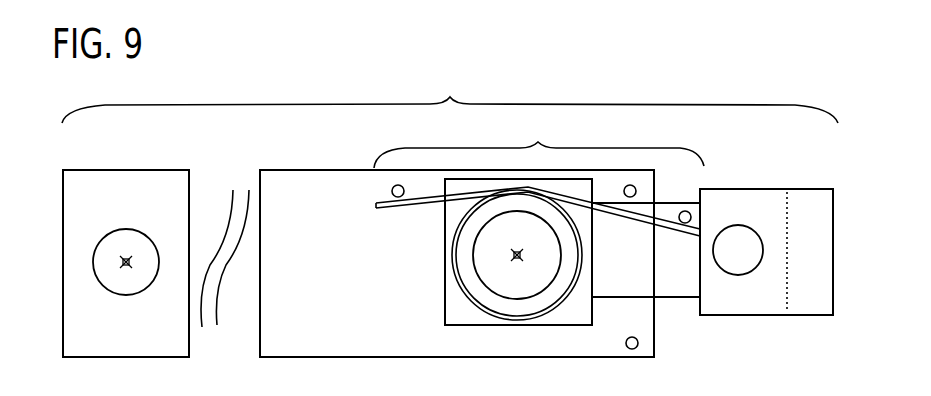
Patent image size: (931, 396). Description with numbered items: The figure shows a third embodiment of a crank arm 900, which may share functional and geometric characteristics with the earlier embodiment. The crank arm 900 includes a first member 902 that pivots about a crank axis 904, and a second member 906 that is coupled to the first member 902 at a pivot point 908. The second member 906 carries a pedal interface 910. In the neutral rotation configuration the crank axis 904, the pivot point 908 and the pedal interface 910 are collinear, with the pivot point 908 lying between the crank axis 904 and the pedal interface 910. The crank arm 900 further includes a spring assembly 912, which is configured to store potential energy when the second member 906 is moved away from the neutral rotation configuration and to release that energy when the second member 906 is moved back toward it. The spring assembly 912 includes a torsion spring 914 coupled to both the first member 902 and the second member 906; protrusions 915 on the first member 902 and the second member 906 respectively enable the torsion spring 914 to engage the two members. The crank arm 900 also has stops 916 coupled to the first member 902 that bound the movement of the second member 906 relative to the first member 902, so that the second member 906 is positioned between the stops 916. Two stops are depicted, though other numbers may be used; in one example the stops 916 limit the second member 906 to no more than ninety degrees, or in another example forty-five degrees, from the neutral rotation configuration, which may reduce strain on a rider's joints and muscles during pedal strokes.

The crank arm 900 is at (450, 100).
The first member 902 is at (300, 170).
The crank axis 904 is at (126, 256).
The second member 906 is at (672, 298).
The pivot point 908 is at (517, 249).
The pedal interface 910 is at (734, 226).
The spring assembly 912 is at (539, 146).
The torsion spring 914 is at (447, 212).
The protrusions 915 is at (392, 191).
The stops 916 is at (636, 187).